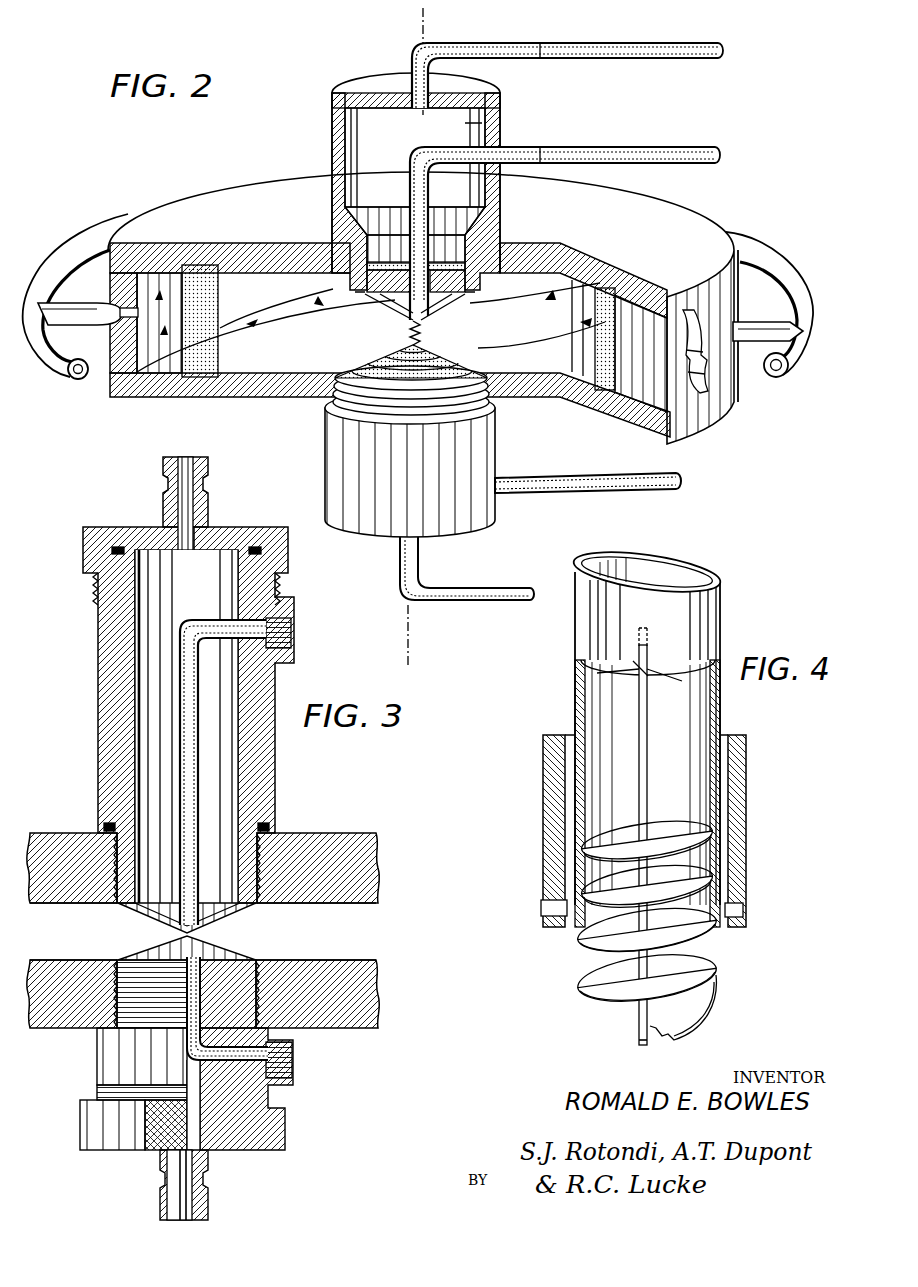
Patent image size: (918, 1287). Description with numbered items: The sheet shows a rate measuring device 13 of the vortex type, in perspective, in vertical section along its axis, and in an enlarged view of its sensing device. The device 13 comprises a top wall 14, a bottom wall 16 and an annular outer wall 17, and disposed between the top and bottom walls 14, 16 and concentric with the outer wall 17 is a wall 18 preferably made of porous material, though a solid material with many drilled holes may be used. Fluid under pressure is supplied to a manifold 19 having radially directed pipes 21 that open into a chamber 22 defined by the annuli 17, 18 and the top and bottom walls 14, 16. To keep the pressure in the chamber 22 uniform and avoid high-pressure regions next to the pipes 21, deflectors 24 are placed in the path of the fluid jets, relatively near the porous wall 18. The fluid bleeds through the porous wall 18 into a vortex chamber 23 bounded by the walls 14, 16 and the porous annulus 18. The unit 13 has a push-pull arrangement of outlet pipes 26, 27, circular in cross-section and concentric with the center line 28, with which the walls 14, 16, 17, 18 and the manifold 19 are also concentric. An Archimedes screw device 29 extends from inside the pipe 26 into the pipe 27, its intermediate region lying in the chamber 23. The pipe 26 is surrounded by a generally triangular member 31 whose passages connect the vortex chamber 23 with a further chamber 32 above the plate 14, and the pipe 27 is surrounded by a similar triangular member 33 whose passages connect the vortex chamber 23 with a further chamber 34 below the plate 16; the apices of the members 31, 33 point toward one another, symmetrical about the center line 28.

In FIG. 2, the rate measuring device 13 is at (211, 167).
In FIG. 2, the top wall 14 is at (712, 219).
In FIG. 3, the top wall 14 is at (348, 834).
In FIG. 2, the bottom wall 16 is at (656, 440).
In FIG. 3, the bottom wall 16 is at (343, 1024).
In FIG. 2, the annular outer wall 17 is at (733, 381).
In FIG. 2, the porous wall 18 is at (606, 388).
In FIG. 2, the manifold 19 is at (80, 246).
In FIG. 2, the radially directed pipes 21 is at (67, 312).
In FIG. 2, the chamber 22 is at (162, 288).
In FIG. 2, the vortex chamber 23 is at (293, 292).
In FIG. 3, the vortex chamber 23 is at (364, 940).
In FIG. 2, the deflectors 24 is at (163, 374).
In FIG. 2, the outlet pipe 26 is at (425, 186).
In FIG. 3, the outlet pipe 26 is at (189, 835).
In FIG. 4, the outlet pipe 26 is at (722, 609).
In FIG. 2, the outlet pipe 27 is at (541, 486).
In FIG. 3, the outlet pipe 27 is at (190, 1037).
In FIG. 2, the center line 28 is at (425, 22).
In FIG. 2, the Archimedes screw device 29 is at (426, 326).
In FIG. 4, the Archimedes screw device 29 is at (735, 861).
In FIG. 2, the triangular member 31 is at (450, 294).
In FIG. 3, the triangular member 31 is at (148, 912).
In FIG. 4, the triangular member 31 is at (735, 758).
In FIG. 2, the further chamber 32 is at (500, 121).
In FIG. 3, the further chamber 32 is at (210, 560).
In FIG. 2, the triangular member 33 is at (450, 351).
In FIG. 3, the triangular member 33 is at (238, 953).
In FIG. 2, the further chamber 34 is at (482, 451).